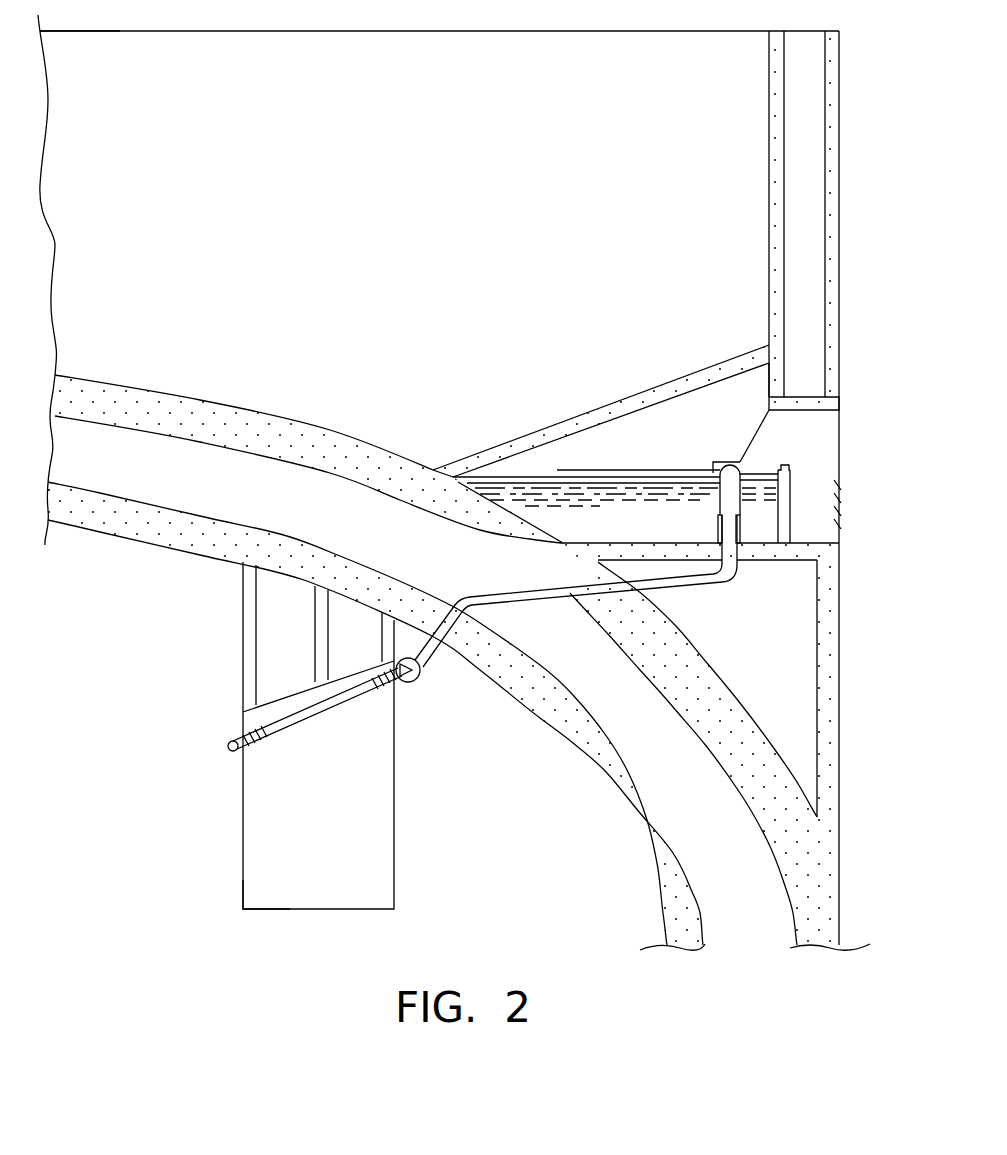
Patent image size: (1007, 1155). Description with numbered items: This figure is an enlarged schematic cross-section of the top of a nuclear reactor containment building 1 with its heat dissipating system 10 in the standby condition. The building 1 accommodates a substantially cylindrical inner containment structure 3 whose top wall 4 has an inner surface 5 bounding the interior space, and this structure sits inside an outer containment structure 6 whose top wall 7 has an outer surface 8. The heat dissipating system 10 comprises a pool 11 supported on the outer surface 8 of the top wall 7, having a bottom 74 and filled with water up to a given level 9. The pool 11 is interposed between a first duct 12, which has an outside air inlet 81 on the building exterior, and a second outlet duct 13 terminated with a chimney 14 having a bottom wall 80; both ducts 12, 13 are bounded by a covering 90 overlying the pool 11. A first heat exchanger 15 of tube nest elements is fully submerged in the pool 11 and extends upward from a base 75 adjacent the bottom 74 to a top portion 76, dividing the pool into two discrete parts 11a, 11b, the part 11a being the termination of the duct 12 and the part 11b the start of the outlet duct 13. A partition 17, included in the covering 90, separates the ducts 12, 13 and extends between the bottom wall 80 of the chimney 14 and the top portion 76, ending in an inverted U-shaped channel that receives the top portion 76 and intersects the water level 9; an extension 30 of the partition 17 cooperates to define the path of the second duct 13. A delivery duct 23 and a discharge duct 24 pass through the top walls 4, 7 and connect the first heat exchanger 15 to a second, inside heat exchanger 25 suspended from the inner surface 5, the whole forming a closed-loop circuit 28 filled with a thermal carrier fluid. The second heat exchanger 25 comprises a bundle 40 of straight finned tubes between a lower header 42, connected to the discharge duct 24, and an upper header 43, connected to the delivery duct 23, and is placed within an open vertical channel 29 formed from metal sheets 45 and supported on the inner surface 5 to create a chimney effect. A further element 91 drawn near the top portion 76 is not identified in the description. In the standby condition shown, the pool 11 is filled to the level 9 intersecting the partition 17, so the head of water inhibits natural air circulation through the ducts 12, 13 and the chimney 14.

The nuclear reactor containment building 1 is at (264, 284).
The inner containment structure 3 is at (666, 878).
The top wall 4 is at (120, 510).
The inner surface 5 is at (178, 540).
The outer containment structure 6 is at (813, 880).
The top wall 7 is at (207, 418).
The outer surface 8 is at (347, 436).
The water level 9 is at (480, 477).
The heat dissipating system 10 is at (456, 562).
The pool 11 is at (540, 477).
The pool part 11a is at (755, 510).
The pool part 11b is at (510, 488).
The first duct 12 is at (813, 428).
The second outlet duct 13 is at (620, 432).
The chimney 14 is at (797, 115).
The first heat exchanger 15 is at (731, 490).
The partition 17 is at (760, 425).
The delivery duct 23 is at (690, 580).
The discharge duct 24 is at (737, 580).
The second heat exchanger 25 is at (340, 705).
The closed-loop circuit 28 is at (532, 598).
The open vertical channel 29 is at (377, 843).
The extension 30 is at (575, 470).
The tube bundle 40 is at (293, 728).
The lower header 42 is at (230, 749).
The upper header 43 is at (420, 682).
The metal sheets 45 is at (275, 880).
The bottom 74 is at (627, 543).
The base 75 is at (738, 543).
The top portion 76 is at (718, 478).
The bottom wall 80 is at (800, 397).
The outside air inlet 81 is at (843, 507).
The covering 90 is at (757, 352).
The bracket 91 is at (720, 462).